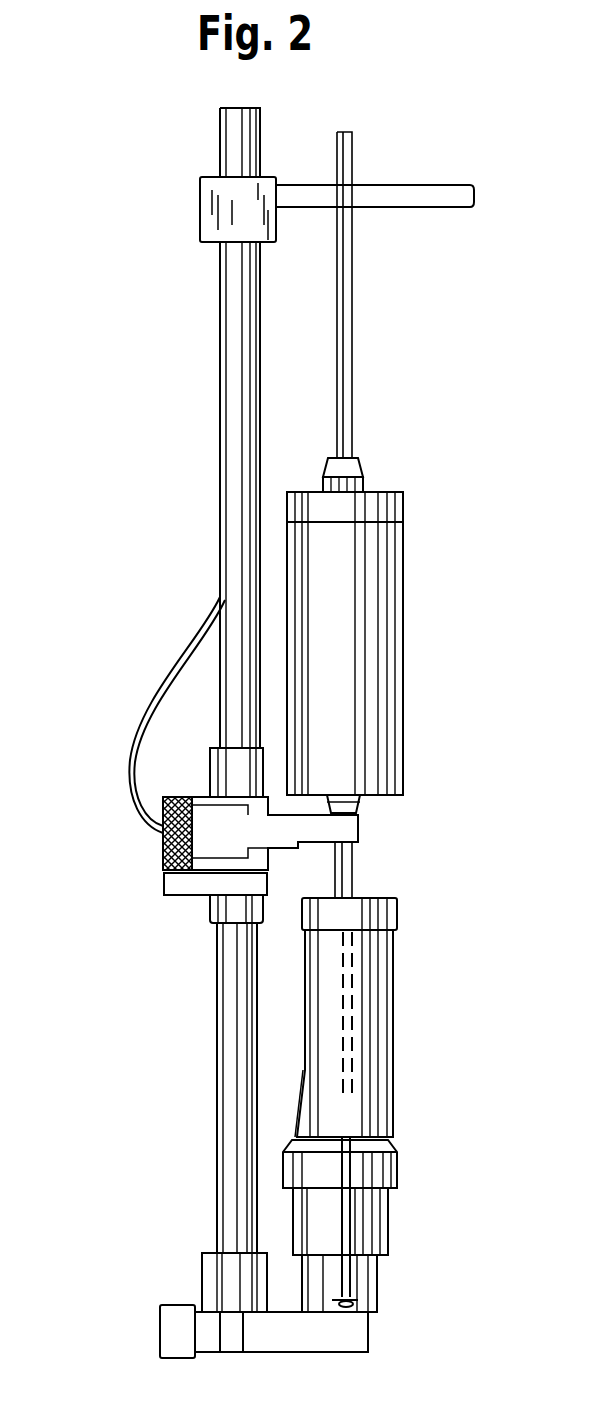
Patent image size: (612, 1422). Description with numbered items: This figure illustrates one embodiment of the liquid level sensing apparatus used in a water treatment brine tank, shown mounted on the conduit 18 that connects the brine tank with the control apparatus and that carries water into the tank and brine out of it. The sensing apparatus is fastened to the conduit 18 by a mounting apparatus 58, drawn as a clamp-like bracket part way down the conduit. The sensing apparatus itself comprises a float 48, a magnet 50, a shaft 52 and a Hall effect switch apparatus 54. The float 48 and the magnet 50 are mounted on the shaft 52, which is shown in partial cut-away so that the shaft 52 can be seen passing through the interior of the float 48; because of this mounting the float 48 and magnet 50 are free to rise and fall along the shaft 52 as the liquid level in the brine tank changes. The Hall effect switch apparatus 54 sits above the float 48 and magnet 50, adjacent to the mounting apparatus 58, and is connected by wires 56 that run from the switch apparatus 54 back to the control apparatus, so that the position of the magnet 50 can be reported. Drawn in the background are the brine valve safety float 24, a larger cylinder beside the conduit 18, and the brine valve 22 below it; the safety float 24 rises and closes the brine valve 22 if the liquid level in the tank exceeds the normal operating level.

The conduit 18 is at (221, 425).
The brine valve 22 is at (394, 1163).
The brine valve safety float 24 is at (394, 648).
The float 48 is at (382, 1023).
The magnet 50 is at (398, 915).
The shaft 52 is at (343, 1227).
The Hall effect switch apparatus 54 is at (347, 827).
The wires 56 is at (130, 770).
The mounting apparatus 58 is at (223, 910).